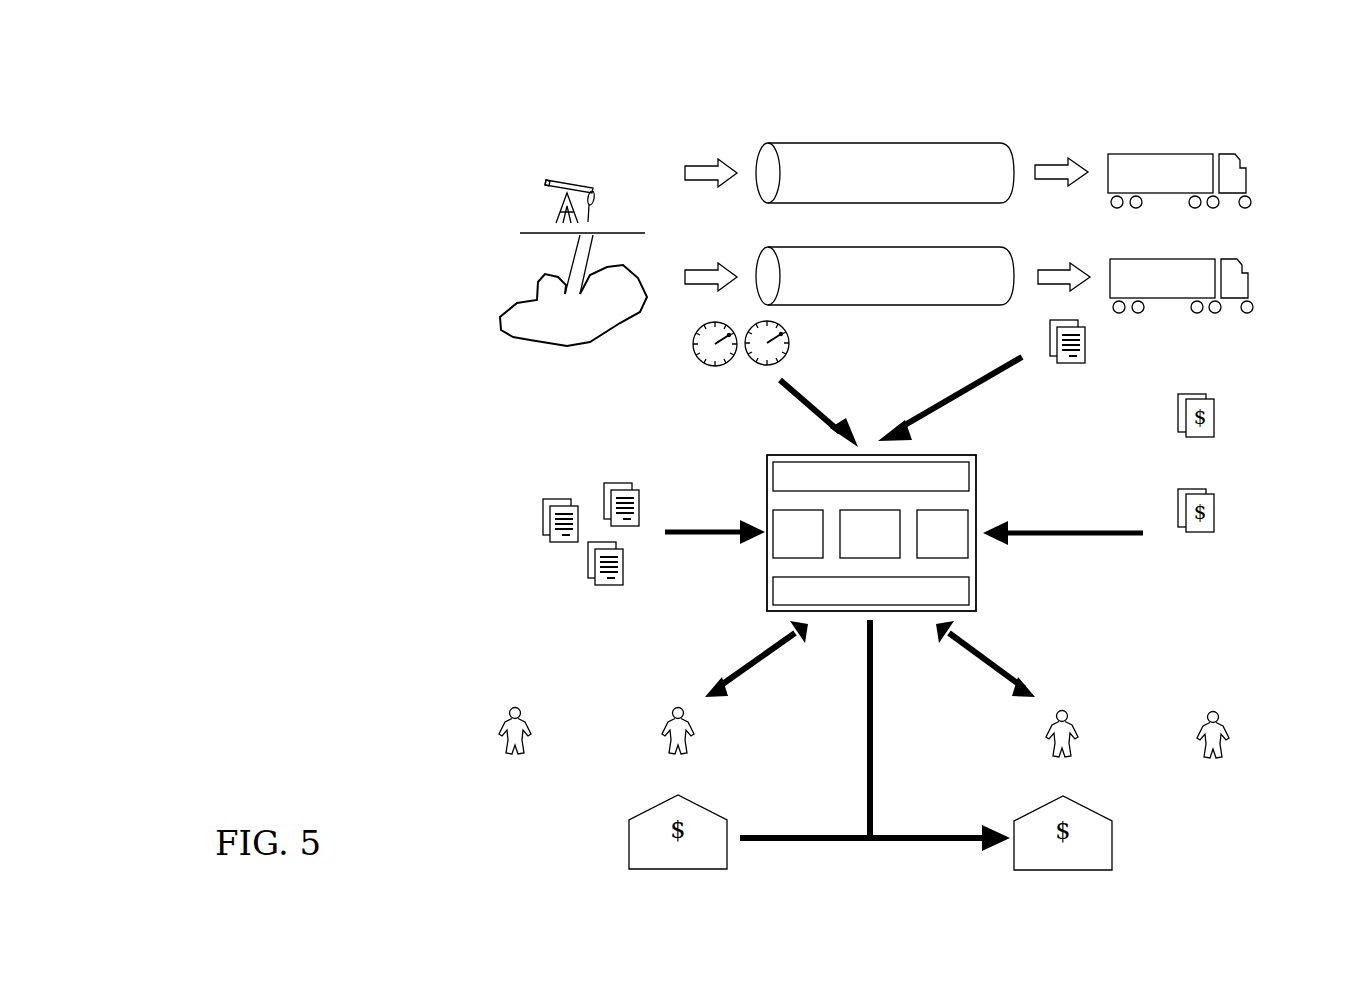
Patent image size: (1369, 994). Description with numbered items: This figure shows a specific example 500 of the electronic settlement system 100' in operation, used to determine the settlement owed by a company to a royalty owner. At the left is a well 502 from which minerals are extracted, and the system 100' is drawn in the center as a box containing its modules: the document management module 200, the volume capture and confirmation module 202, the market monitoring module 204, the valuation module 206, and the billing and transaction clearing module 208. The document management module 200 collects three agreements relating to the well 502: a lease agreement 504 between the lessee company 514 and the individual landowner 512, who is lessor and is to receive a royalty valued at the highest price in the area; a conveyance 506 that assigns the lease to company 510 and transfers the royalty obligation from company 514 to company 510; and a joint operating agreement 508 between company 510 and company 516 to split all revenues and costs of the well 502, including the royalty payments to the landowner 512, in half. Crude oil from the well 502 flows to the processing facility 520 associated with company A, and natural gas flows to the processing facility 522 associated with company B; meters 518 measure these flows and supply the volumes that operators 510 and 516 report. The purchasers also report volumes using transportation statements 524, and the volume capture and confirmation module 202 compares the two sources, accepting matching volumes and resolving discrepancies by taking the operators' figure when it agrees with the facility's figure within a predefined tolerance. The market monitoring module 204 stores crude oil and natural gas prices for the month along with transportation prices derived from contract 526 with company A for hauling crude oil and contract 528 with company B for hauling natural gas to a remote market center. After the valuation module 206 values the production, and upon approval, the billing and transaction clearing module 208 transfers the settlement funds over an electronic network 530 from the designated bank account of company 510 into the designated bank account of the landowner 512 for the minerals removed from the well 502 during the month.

The example 500 is at (479, 94).
The well 502 is at (509, 252).
The lease agreement 504 is at (618, 483).
The conveyance 506 is at (545, 520).
The joint operating agreement 508 is at (606, 591).
The company 510 is at (652, 736).
The landowner 512 is at (1092, 736).
The company 514 is at (1242, 737).
The company 516 is at (490, 737).
The meters 518 is at (730, 378).
The processing facility 520 is at (868, 143).
The processing facility 522 is at (818, 247).
The transportation statements 524 is at (1089, 375).
The contract 526 is at (1245, 421).
The contract 528 is at (1237, 516).
The electronic network 530 is at (852, 840).
The electronic settlement system 100' is at (911, 508).
The document management module 200 is at (798, 534).
The volume capture and confirmation module 202 is at (871, 476).
The market monitoring module 204 is at (942, 534).
The valuation module 206 is at (870, 534).
The billing and transaction clearing module 208 is at (871, 591).